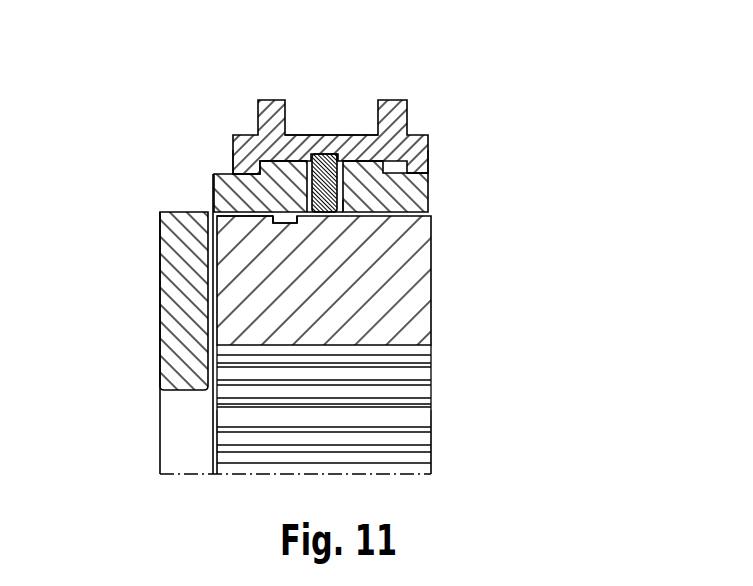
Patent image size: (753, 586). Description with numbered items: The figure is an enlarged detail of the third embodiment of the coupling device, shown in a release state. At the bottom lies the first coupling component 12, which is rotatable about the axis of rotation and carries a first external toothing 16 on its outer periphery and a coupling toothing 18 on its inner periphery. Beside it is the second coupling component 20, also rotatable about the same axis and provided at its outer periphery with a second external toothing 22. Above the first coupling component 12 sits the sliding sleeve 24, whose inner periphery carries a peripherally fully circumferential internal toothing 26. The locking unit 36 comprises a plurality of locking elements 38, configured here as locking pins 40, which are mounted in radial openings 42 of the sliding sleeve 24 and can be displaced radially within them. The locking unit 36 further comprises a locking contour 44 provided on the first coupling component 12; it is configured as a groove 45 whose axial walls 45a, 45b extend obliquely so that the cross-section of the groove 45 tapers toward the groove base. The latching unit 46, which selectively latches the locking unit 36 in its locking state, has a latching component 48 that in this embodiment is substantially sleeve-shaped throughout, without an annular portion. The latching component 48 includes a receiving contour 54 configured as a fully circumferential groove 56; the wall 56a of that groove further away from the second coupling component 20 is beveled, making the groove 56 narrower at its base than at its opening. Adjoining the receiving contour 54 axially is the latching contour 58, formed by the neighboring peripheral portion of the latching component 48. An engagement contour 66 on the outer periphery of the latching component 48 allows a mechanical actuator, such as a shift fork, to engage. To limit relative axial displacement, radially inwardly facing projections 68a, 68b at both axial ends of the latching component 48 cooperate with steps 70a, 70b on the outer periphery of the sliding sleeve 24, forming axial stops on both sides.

The first coupling component 12 is at (400, 330).
The first external toothing 16 is at (408, 213).
The coupling toothing 18 is at (397, 393).
The second coupling component 20 is at (187, 375).
The second external toothing 22 is at (186, 210).
The sliding sleeve 24 is at (215, 178).
The internal toothing 26 is at (248, 218).
The locking unit 36 is at (577, 181).
The locking elements 38 is at (442, 272).
The locking pins 40 is at (340, 214).
The radial openings 42 is at (283, 163).
The locking contour 44 is at (162, 280).
The groove 45 is at (282, 224).
The axial wall 45a is at (272, 220).
The axial wall 45b is at (300, 219).
The latching unit 46 is at (593, 139).
The latching component 48 is at (253, 148).
The receiving contour 54 is at (356, 117).
The groove 56 is at (326, 153).
The wall 56a is at (342, 151).
The latching contour 58 is at (366, 211).
The engagement contour 66 is at (358, 115).
The projection 68a is at (236, 172).
The projection 68b is at (431, 170).
The step 70a is at (233, 194).
The step 70b is at (376, 166).